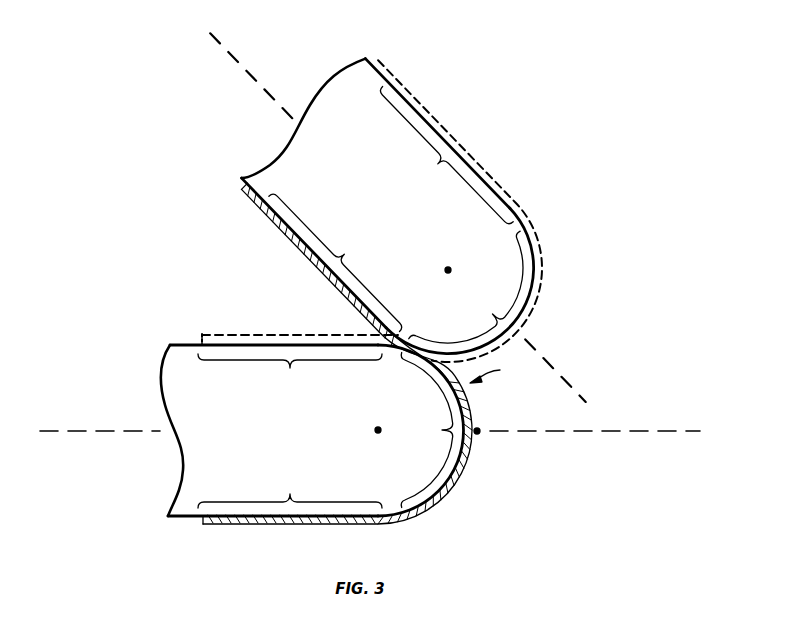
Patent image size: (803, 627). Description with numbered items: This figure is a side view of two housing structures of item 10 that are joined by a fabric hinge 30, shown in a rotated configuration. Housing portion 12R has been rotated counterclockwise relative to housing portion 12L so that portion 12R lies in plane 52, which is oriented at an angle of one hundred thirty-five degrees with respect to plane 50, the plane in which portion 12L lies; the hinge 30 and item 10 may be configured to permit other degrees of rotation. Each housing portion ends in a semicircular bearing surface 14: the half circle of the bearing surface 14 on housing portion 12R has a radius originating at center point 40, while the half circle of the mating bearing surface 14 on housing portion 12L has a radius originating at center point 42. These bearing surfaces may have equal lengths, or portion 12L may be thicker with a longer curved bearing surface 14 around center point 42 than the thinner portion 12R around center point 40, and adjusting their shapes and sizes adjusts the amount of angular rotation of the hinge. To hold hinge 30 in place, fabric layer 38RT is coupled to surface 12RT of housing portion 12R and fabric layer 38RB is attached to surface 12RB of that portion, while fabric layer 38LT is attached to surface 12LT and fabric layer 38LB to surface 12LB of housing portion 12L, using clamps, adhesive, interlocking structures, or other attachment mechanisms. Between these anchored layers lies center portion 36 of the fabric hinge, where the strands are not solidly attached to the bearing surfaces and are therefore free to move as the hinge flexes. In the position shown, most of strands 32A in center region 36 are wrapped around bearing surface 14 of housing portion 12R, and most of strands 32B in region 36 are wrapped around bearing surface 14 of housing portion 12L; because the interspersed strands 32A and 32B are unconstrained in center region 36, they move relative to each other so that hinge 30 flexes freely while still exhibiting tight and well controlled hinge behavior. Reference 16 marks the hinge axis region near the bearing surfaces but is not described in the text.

The item 10 is at (100, 156).
The housing portion 12R is at (332, 95).
The housing portion 12L is at (183, 463).
The surface 12RB is at (402, 93).
The surface 12RT is at (262, 210).
The surface 12LT is at (287, 343).
The surface 12LB is at (258, 526).
The bearing surface 14 is at (527, 305).
The hinge axis 16 is at (477, 435).
The hinge 30 is at (497, 373).
The strands 32A is at (223, 336).
The strands 32B is at (292, 236).
The center portion 36 is at (462, 369).
The fabric layer 38RB is at (446, 155).
The fabric layer 38RT is at (335, 262).
The fabric layer 38LT is at (290, 375).
The fabric layer 38LB is at (290, 491).
The center point 40 is at (448, 266).
The center point 42 is at (375, 430).
The plane 50 is at (44, 436).
The plane 52 is at (218, 36).